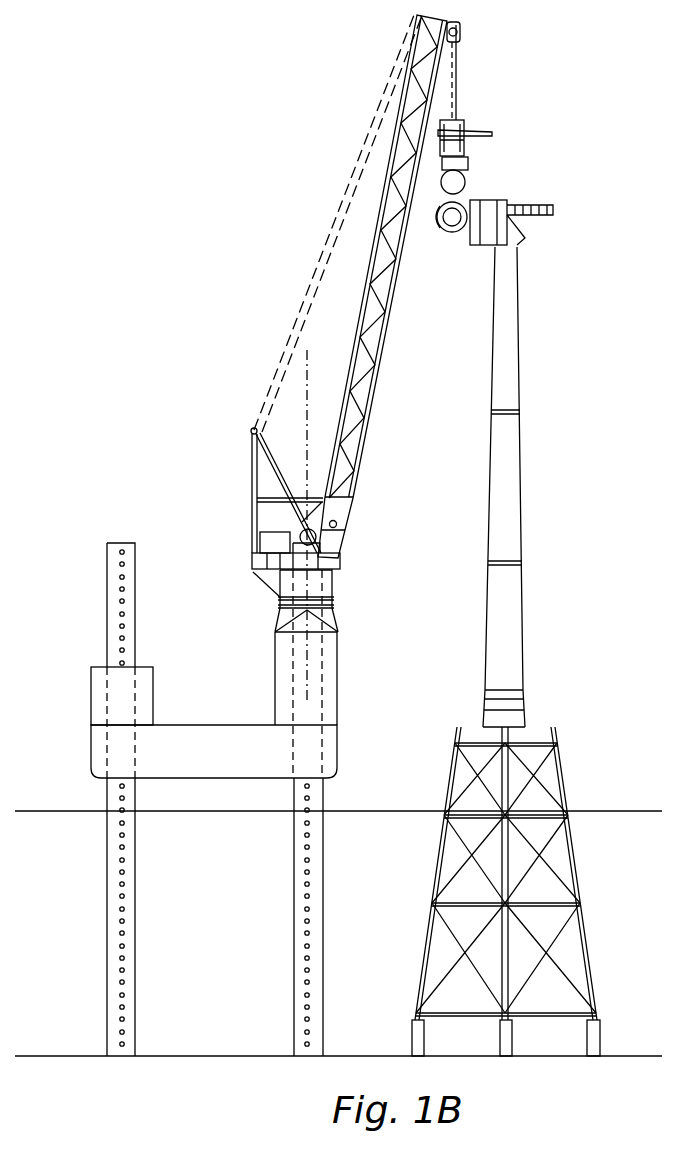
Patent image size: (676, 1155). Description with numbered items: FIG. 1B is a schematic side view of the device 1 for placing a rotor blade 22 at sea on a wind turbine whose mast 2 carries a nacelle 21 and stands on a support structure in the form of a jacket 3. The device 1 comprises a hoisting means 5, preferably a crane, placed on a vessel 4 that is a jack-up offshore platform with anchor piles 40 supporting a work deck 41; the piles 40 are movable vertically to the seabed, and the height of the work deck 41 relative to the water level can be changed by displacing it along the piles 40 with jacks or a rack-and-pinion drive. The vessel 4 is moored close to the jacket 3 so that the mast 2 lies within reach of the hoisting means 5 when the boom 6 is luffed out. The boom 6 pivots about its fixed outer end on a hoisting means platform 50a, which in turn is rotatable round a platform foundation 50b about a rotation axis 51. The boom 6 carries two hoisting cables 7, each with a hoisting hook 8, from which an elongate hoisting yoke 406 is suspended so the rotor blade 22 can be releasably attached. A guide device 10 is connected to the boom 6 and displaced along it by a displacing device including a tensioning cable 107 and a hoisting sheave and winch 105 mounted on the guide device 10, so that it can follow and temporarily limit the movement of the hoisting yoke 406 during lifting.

The device 1 is at (333, 218).
The mast 2 is at (516, 348).
The jacket 3 is at (577, 880).
The vessel 4 is at (181, 719).
The hoisting means 5 is at (249, 504).
The boom 6 is at (386, 372).
The hoisting cables 7 is at (452, 76).
The hoisting hook 8 is at (452, 110).
The guide device 10 is at (494, 129).
The nacelle 21 is at (528, 231).
The rotor blade 22 is at (466, 183).
The anchor piles 40 is at (116, 891).
The work deck 41 is at (218, 745).
The hoisting means platform 50a is at (334, 586).
The platform foundation 50b is at (335, 684).
The rotation axis 51 is at (302, 384).
The hoisting sheave and winch 105 is at (295, 548).
The tensioning cable 107 is at (455, 95).
The hoisting yoke 406 is at (478, 153).